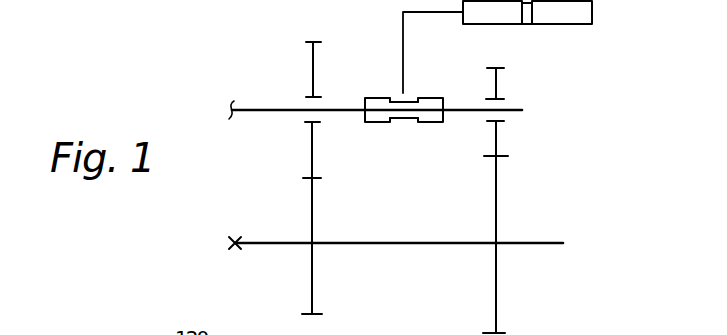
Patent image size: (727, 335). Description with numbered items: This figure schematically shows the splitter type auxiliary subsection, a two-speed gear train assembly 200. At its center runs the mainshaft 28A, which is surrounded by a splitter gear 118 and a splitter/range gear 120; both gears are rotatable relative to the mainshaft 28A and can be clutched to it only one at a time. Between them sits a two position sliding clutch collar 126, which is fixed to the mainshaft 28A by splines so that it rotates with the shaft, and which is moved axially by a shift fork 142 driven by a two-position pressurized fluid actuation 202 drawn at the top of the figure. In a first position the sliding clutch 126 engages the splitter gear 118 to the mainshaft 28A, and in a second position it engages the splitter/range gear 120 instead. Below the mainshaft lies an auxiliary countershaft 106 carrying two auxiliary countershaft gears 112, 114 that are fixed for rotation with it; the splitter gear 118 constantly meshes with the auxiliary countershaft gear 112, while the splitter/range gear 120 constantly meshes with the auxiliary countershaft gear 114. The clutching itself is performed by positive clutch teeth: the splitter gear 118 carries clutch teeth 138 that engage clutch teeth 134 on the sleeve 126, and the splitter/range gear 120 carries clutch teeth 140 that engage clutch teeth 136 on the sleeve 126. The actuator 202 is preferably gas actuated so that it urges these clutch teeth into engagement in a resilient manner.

The mainshaft 28A is at (280, 111).
The auxiliary countershaft 106 is at (412, 245).
The auxiliary countershaft gear 112 is at (312, 277).
The auxiliary countershaft gear 114 is at (497, 307).
The splitter gear 118 is at (312, 67).
The splitter/range gear 120 is at (497, 87).
The two position sliding clutch collar 126 is at (405, 128).
The clutch teeth 134 is at (376, 92).
The clutch teeth 136 is at (440, 123).
The clutch teeth 138 is at (317, 117).
The clutch teeth 140 is at (496, 99).
The shift fork 142 is at (403, 72).
The two-speed gear train assembly 200 is at (566, 179).
The two-position pressurized fluid actuation 202 is at (572, 25).